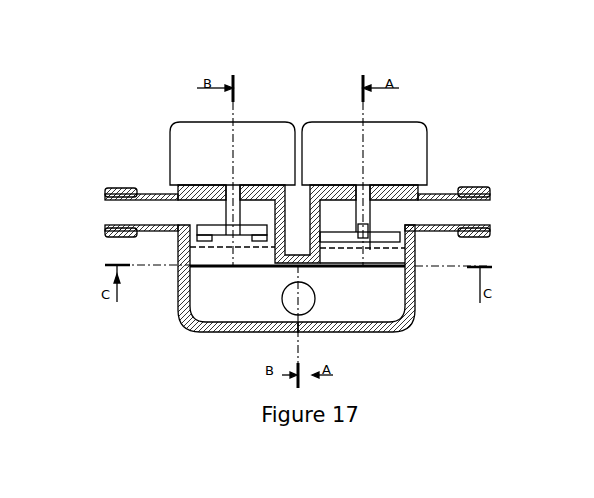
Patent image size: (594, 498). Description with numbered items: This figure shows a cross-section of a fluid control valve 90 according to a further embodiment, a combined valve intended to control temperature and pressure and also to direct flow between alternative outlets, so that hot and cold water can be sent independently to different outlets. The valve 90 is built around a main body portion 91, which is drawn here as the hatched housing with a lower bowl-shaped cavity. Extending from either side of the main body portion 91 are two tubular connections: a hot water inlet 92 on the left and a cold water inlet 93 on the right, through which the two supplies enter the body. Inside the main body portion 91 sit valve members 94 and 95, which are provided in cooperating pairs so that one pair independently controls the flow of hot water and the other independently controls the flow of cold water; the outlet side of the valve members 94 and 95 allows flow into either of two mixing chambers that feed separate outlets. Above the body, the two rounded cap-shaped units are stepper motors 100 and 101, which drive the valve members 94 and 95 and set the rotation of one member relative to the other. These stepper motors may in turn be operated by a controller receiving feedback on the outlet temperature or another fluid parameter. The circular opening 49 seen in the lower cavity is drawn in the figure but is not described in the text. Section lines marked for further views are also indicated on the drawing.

The fluid control valve 90 is at (354, 154).
The stepper motor 100 is at (254, 120).
The stepper motor 101 is at (412, 143).
The hot water inlet 92 is at (118, 181).
The cold water inlet 93 is at (485, 197).
The main body portion 91 is at (433, 257).
The valve member 94 is at (202, 286).
The valve member 95 is at (407, 288).
The aperture 49 is at (356, 333).